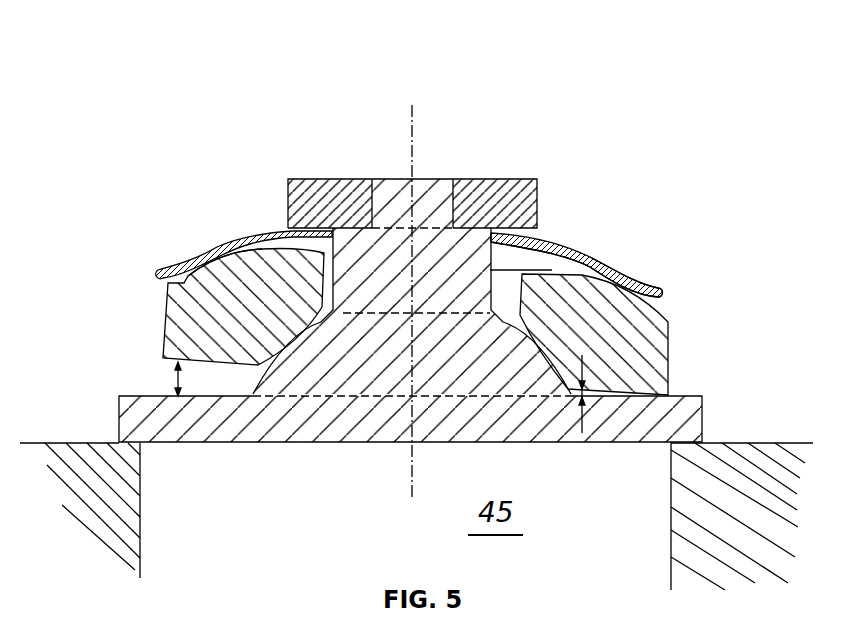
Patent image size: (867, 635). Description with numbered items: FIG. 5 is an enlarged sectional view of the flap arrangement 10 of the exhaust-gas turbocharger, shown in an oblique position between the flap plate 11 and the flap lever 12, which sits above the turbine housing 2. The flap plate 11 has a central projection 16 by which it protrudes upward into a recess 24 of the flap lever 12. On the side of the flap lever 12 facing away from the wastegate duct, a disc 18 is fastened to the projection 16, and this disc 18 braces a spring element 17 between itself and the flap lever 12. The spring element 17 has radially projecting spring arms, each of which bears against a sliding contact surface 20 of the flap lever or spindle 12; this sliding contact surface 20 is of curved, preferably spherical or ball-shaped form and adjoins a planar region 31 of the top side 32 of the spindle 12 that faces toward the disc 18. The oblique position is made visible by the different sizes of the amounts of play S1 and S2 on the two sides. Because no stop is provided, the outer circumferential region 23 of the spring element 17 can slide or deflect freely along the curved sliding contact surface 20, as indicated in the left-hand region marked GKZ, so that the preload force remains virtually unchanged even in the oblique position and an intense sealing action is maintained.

The fastening arrangement 10 is at (534, 124).
The disc 18 is at (328, 185).
The projection 16 is at (424, 240).
The planar region 31 is at (549, 268).
The spring element 17 is at (585, 240).
The sliding contact surface 20 is at (625, 283).
The outer circumferential region 23 is at (650, 289).
The flap lever 12 is at (665, 362).
The recess 24 is at (323, 289).
The top side 32 is at (305, 250).
The flap plate 11 is at (205, 423).
The turbine housing 2 is at (35, 465).
The sliding contact zone GKZ is at (210, 250).
The amount of play S1 is at (178, 378).
The amount of play S2 is at (588, 397).